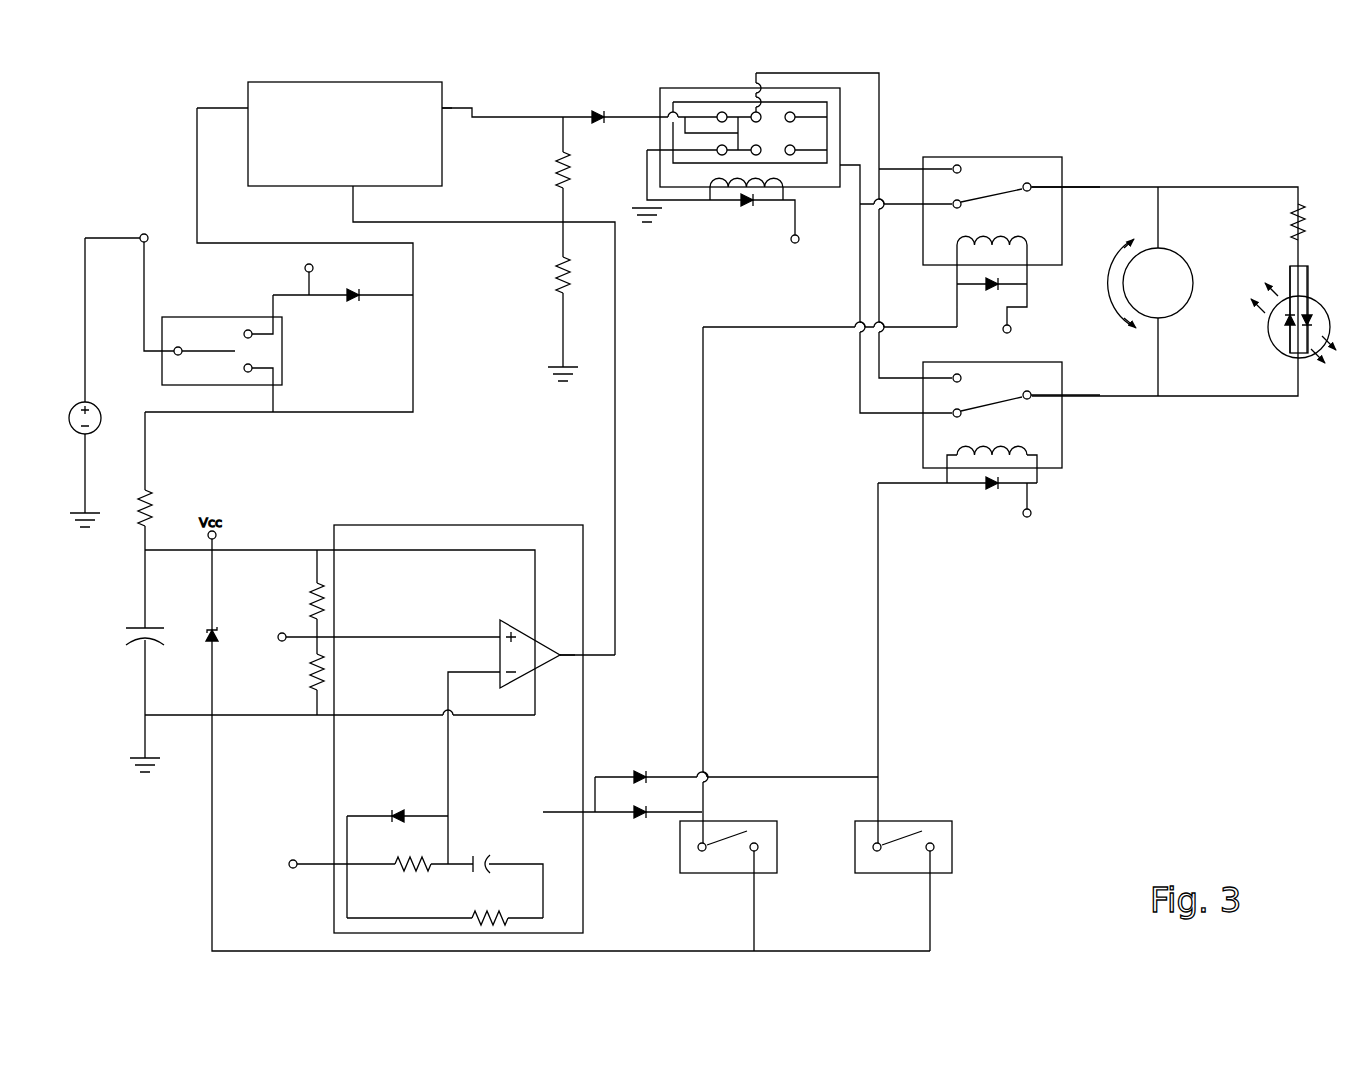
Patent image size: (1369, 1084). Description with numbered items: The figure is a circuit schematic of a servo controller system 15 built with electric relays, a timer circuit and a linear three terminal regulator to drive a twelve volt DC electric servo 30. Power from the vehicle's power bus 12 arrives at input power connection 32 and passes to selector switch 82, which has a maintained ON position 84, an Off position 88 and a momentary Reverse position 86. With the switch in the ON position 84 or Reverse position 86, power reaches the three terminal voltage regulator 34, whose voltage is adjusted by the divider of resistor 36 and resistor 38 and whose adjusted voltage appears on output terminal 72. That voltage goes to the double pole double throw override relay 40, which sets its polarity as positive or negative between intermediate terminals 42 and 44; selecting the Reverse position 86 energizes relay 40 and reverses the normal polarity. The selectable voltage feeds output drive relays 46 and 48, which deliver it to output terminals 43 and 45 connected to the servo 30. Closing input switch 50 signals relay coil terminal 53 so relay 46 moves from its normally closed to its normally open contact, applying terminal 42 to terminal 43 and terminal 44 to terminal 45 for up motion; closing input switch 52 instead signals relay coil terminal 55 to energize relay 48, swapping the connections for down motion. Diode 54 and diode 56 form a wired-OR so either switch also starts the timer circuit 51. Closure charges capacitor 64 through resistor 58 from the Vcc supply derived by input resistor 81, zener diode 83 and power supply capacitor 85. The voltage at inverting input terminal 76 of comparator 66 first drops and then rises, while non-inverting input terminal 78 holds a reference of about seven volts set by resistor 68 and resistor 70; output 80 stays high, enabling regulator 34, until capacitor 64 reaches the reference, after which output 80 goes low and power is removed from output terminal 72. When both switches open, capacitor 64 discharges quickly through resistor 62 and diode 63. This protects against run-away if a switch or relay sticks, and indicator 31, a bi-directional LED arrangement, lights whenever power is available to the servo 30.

The power bus 12 is at (74, 438).
The servo controller system 15 is at (605, 66).
The electric servo 30 is at (1198, 262).
The indicator 31 is at (1323, 304).
The input power connection 32 is at (142, 231).
The three terminal voltage regulator 34 is at (245, 176).
The resistor 36 is at (551, 174).
The resistor 38 is at (551, 276).
The override relay 40 is at (716, 84).
The intermediate terminal 42 is at (881, 140).
The output terminal 43 is at (1098, 182).
The intermediate terminal 44 is at (857, 180).
The output terminal 45 is at (969, 430).
The output drive relay 46 is at (981, 222).
The output drive relay 48 is at (1068, 466).
The input switch 50 is at (780, 876).
The timer circuit 51 is at (432, 522).
The input switch 52 is at (953, 876).
The relay coil terminal 53 is at (951, 258).
The diode 54 is at (643, 768).
The relay coil terminal 55 is at (952, 451).
The diode 56 is at (634, 827).
The resistor 58 is at (405, 878).
The resistor 62 is at (472, 912).
The diode 63 is at (388, 811).
The capacitor 64 is at (493, 877).
The comparator 66 is at (540, 680).
The resistor 68 is at (308, 600).
The resistor 70 is at (308, 676).
The output terminal 72 is at (446, 106).
The inverting input terminal 76 is at (493, 668).
The non-inverting input terminal 78 is at (493, 634).
The output 80 is at (569, 662).
The input resistor 81 is at (158, 506).
The selector switch 82 is at (287, 336).
The zener diode 83 is at (221, 629).
The ON position 84 is at (243, 373).
The power supply capacitor 85 is at (125, 629).
The Reverse position 86 is at (243, 326).
The Off position 88 is at (264, 351).